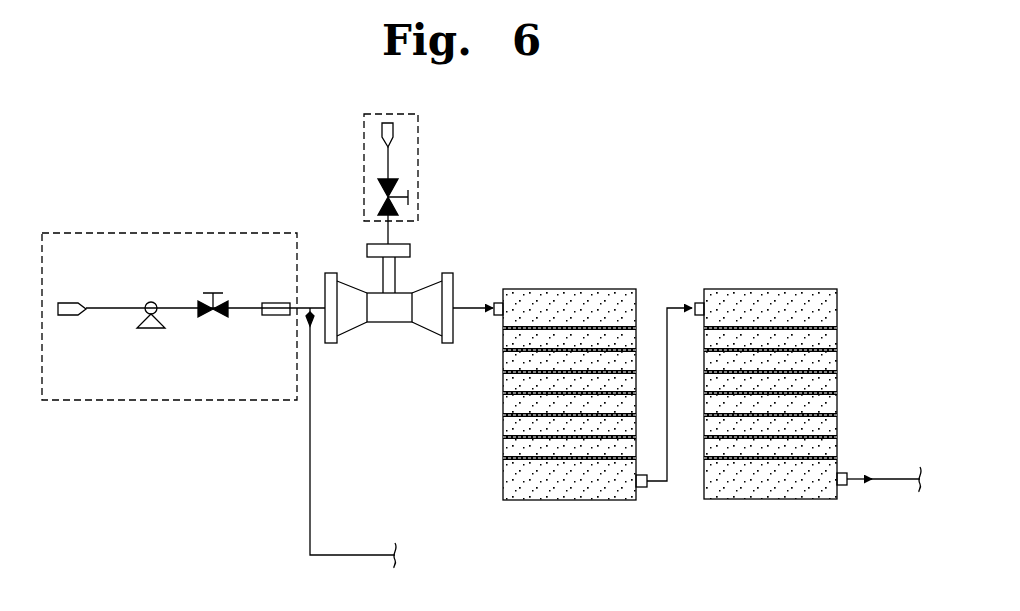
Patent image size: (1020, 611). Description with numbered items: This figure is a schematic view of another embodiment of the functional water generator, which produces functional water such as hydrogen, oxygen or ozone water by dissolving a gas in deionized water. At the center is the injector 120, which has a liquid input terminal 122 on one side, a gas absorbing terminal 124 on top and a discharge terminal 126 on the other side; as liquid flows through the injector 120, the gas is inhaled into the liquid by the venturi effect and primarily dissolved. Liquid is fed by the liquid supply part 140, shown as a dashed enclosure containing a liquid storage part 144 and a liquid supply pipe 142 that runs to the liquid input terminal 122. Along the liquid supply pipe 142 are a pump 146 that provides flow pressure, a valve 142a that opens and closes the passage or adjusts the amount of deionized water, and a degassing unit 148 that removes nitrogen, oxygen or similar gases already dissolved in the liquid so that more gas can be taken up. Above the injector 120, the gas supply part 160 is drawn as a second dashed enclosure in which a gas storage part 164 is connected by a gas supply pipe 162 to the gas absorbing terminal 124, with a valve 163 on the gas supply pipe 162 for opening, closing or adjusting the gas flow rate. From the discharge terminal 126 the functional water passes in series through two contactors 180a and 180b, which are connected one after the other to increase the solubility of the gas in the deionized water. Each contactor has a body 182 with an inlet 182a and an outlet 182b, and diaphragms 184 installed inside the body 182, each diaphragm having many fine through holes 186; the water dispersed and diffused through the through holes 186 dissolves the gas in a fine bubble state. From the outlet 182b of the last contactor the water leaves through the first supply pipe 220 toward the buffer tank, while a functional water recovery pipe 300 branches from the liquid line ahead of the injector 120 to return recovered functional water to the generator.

The injector 120 is at (409, 333).
The liquid input terminal 122 is at (350, 348).
The gas absorbing terminal 124 is at (398, 276).
The discharge terminal 126 is at (432, 348).
The liquid supply part 140 is at (183, 403).
The liquid supply pipe 142 is at (176, 300).
The valve 142a is at (218, 319).
The liquid storage part 144 is at (67, 316).
The pump 146 is at (153, 330).
The degassing unit 148 is at (275, 300).
The gas supply part 160 is at (364, 160).
The gas supply pipe 162 is at (390, 158).
The valve 163 is at (410, 197).
The gas storage part 164 is at (397, 128).
The contactor 180a is at (590, 285).
The contactor 180b is at (801, 356).
The body 182 is at (838, 310).
The inlet 182a is at (694, 303).
The outlet 182b is at (848, 471).
The diaphragms 184 is at (775, 330).
The through holes 186 is at (724, 330).
The first supply pipe 220 is at (890, 481).
The functional water recovery pipe 300 is at (312, 488).